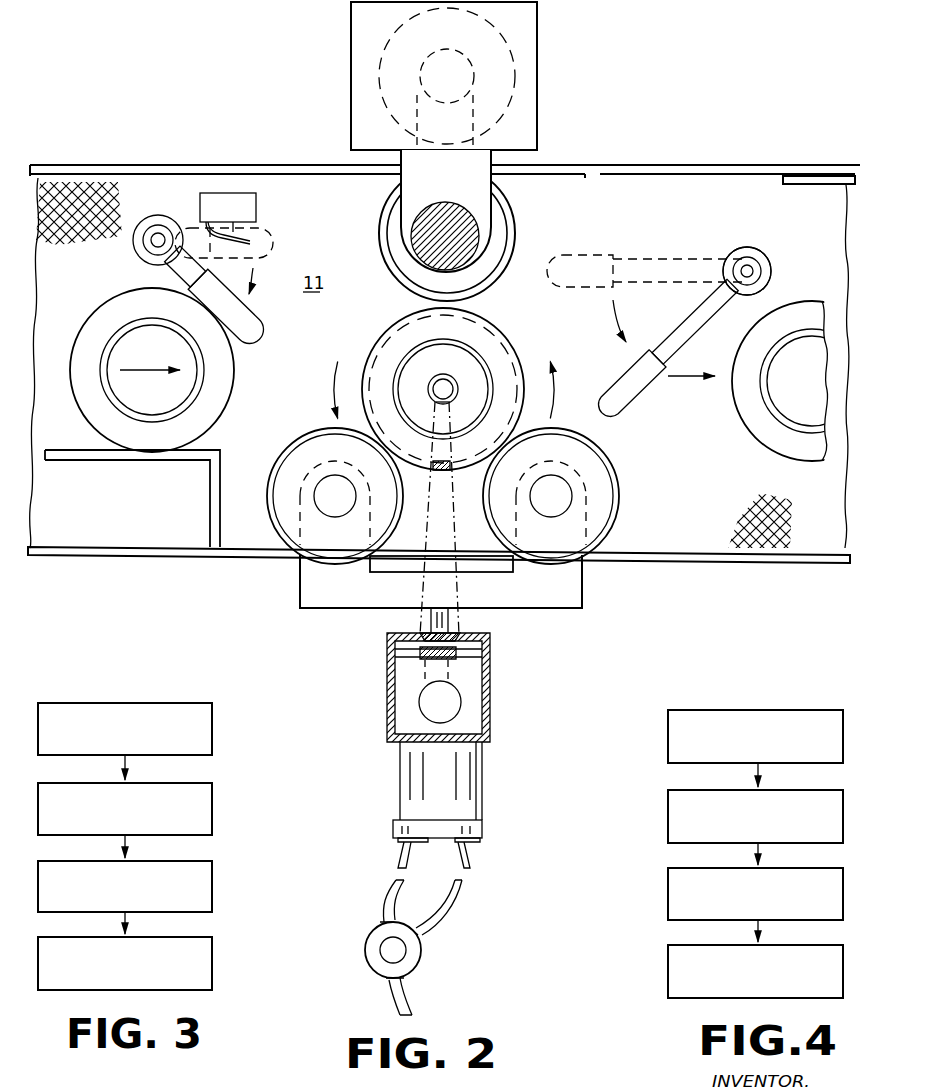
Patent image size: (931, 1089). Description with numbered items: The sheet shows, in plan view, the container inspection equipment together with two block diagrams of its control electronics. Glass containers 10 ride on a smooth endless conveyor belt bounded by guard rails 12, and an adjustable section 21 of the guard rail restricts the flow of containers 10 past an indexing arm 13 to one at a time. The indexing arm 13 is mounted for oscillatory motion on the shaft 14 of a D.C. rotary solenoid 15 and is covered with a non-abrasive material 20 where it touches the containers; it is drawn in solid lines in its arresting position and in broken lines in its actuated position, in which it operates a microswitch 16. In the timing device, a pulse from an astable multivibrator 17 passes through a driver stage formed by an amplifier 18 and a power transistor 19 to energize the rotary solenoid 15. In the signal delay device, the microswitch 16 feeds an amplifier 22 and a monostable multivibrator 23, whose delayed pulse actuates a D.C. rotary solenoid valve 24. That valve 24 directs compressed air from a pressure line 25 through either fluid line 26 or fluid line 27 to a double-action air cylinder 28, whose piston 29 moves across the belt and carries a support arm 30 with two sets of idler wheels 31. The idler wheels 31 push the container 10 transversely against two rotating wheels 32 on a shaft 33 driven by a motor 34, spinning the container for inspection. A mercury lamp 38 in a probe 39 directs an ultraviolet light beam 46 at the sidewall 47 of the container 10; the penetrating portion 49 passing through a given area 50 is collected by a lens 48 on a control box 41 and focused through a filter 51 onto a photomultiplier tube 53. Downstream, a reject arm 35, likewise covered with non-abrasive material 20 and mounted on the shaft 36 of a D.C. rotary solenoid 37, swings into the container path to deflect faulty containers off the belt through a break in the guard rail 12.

In FIG. 2, the glass container 10 is at (232, 390).
In FIG. 2, the guard rail 12 is at (196, 164).
In FIG. 2, the indexing arm 13 is at (203, 260).
In FIG. 2, the shaft 14 is at (148, 250).
In FIG. 2, the D.C. rotary solenoid 15 is at (146, 218).
In FIG. 3, the D.C. rotary solenoid 15 is at (212, 960).
In FIG. 2, the microswitch 16 is at (257, 206).
In FIG. 4, the microswitch 16 is at (668, 726).
In FIG. 3, the astable multivibrator 17 is at (212, 722).
In FIG. 3, the amplifier 18 is at (212, 802).
In FIG. 3, the power transistor 19 is at (212, 880).
In FIG. 2, the non-abrasive material 20 is at (246, 320).
In FIG. 2, the adjustable section of guard rail 21 is at (222, 460).
In FIG. 4, the amplifier 22 is at (668, 804).
In FIG. 4, the monostable multivibrator 23 is at (668, 882).
In FIG. 2, the D.C. rotary solenoid valve 24 is at (420, 946).
In FIG. 4, the D.C. rotary solenoid valve 24 is at (668, 958).
In FIG. 2, the pressure line 25 is at (408, 995).
In FIG. 2, the fluid line 26 is at (468, 862).
In FIG. 2, the fluid line 27 is at (400, 862).
In FIG. 2, the double-action air cylinder 28 is at (484, 764).
In FIG. 2, the piston 29 is at (452, 618).
In FIG. 2, the support arm 30 is at (582, 605).
In FIG. 2, the idler wheels 31 is at (314, 432).
In FIG. 2, the rotating wheels 32 is at (497, 286).
In FIG. 2, the shaft 33 is at (466, 262).
In FIG. 2, the motor 34 is at (537, 80).
In FIG. 2, the reject arm 35 is at (682, 326).
In FIG. 2, the shaft 36 is at (756, 268).
In FIG. 2, the D.C. rotary solenoid 37 is at (768, 270).
In FIG. 2, the mercury lamp 38 is at (445, 387).
In FIG. 2, the probe 39 is at (428, 384).
In FIG. 2, the control box 41 is at (492, 724).
In FIG. 2, the ultraviolet light beam 46 is at (438, 418).
In FIG. 2, the sidewall 47 is at (453, 472).
In FIG. 2, the lens 48 is at (422, 632).
In FIG. 2, the penetrating portion 49 is at (454, 524).
In FIG. 2, the area 50 is at (438, 488).
In FIG. 2, the filter 51 is at (456, 661).
In FIG. 2, the photomultiplier tube 53 is at (460, 698).